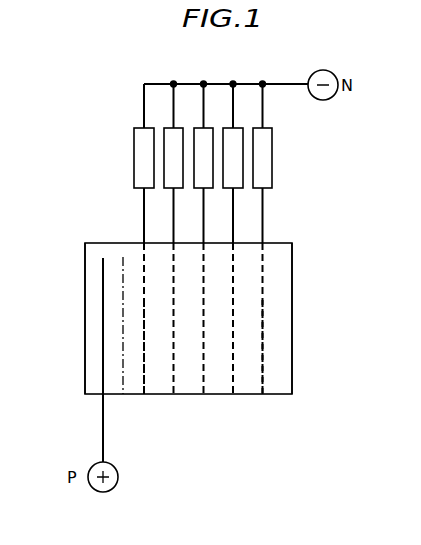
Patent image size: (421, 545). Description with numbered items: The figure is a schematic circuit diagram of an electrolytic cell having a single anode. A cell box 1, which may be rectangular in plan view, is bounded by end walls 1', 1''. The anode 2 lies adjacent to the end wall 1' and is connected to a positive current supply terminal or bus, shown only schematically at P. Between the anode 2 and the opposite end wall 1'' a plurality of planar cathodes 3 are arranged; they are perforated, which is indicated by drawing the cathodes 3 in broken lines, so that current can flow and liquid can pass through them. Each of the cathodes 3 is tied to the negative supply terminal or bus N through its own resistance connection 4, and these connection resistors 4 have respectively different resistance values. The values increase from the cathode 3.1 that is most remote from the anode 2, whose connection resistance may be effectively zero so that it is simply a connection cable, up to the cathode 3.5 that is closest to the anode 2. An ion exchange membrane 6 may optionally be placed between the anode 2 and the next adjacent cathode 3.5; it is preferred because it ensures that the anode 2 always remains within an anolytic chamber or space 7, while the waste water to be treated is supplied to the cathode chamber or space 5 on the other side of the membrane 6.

The cell box 1 is at (190, 358).
The end wall 1' is at (64, 318).
The end wall 1'' is at (316, 318).
The anode 2 is at (103, 327).
The planar cathodes 3 is at (207, 375).
The most remote cathode 3.1 is at (264, 385).
The closest cathode 3.5 is at (145, 383).
The resistance connections 4 is at (134, 158).
The cathode chamber 5 is at (194, 386).
The ion exchange membrane 6 is at (122, 258).
The anolytic chamber 7 is at (90, 298).